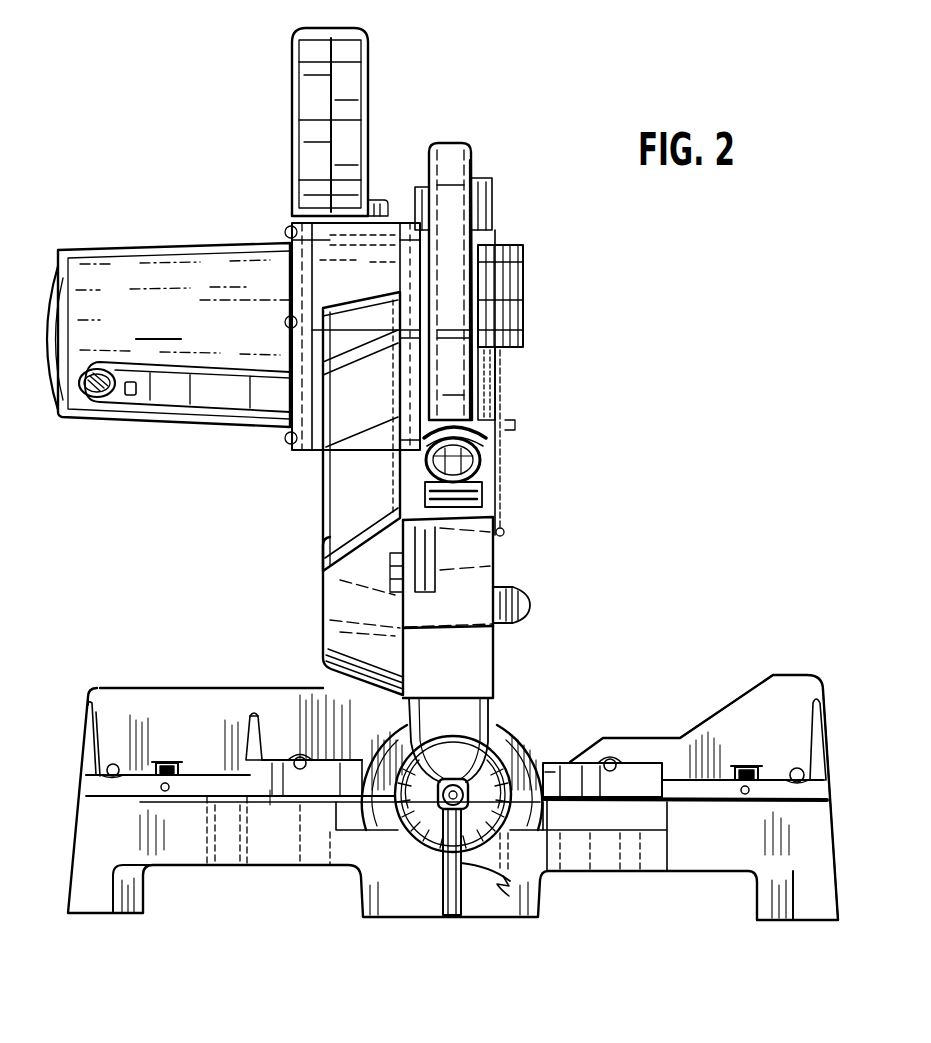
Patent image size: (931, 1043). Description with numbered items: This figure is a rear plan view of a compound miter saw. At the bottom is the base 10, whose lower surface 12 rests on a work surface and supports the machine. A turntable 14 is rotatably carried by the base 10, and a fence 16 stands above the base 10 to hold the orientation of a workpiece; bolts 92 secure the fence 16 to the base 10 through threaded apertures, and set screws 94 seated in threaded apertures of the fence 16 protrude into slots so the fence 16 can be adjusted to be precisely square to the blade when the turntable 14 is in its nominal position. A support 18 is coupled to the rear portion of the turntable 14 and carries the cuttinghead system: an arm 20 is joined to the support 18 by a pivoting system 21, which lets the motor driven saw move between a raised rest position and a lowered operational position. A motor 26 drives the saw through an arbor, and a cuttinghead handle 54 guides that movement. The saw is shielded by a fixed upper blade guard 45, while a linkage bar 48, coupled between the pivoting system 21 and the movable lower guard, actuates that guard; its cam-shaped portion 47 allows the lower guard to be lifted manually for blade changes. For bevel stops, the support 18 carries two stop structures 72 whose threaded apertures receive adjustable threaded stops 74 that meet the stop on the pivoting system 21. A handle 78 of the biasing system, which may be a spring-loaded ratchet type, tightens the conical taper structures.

The base 10 is at (197, 848).
The lower surface 12 is at (805, 921).
The turntable 14 is at (622, 803).
The fence 16 is at (755, 702).
The support 18 is at (346, 752).
The arm 20 is at (322, 492).
The pivoting system 21 is at (496, 644).
The motor 26 is at (168, 335).
The upper blade guard 45 is at (456, 160).
The cam-shaped portion 47 is at (525, 293).
The linkage bar 48 is at (497, 466).
The cuttinghead handle 54 is at (376, 79).
The stop structures 72 is at (517, 754).
The threaded stops 74 is at (537, 764).
The handle 78 is at (512, 884).
The bolts 92 is at (168, 762).
The set screws 94 is at (162, 792).